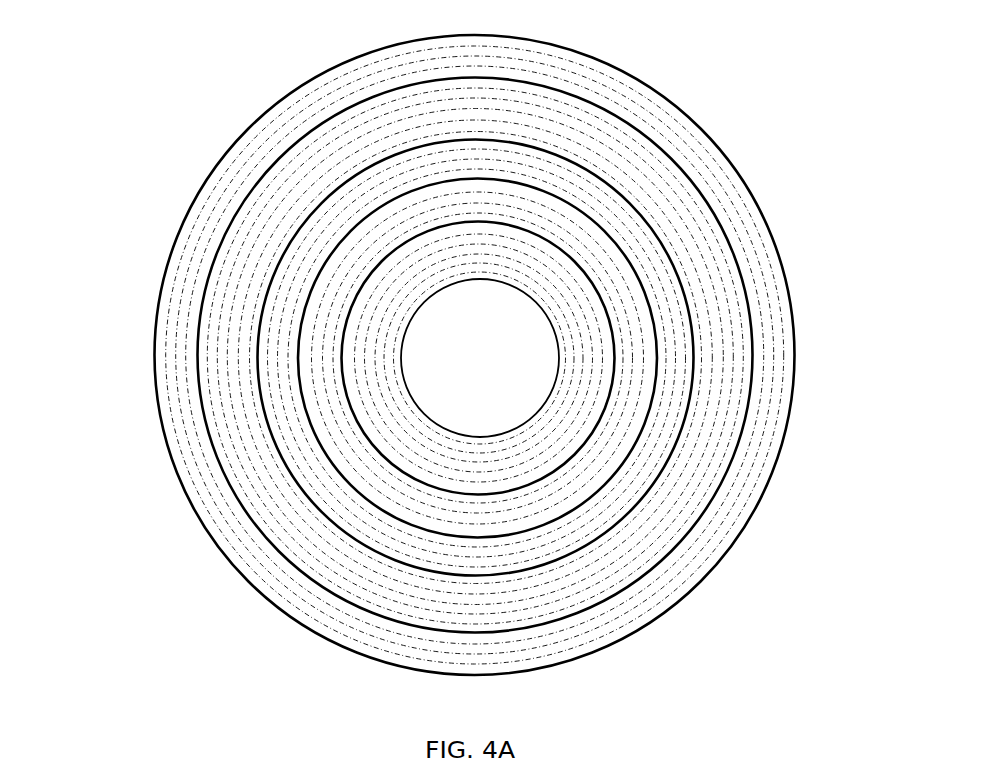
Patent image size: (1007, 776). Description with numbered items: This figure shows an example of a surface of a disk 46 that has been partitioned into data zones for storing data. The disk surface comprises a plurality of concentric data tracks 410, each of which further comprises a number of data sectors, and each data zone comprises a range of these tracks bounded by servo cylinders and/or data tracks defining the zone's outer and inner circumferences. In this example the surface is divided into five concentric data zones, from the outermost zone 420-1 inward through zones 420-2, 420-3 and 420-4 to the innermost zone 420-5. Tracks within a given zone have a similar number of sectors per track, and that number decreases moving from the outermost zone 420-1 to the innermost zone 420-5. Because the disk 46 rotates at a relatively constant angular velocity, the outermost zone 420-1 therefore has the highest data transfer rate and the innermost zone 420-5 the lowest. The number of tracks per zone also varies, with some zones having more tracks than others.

The disk 46 is at (770, 200).
The data track 410 is at (678, 155).
The outermost zone 420-1 is at (227, 153).
The data zone 420-2 is at (225, 233).
The data zone 420-3 is at (262, 300).
The data zone 420-4 is at (294, 377).
The innermost zone 420-5 is at (346, 408).